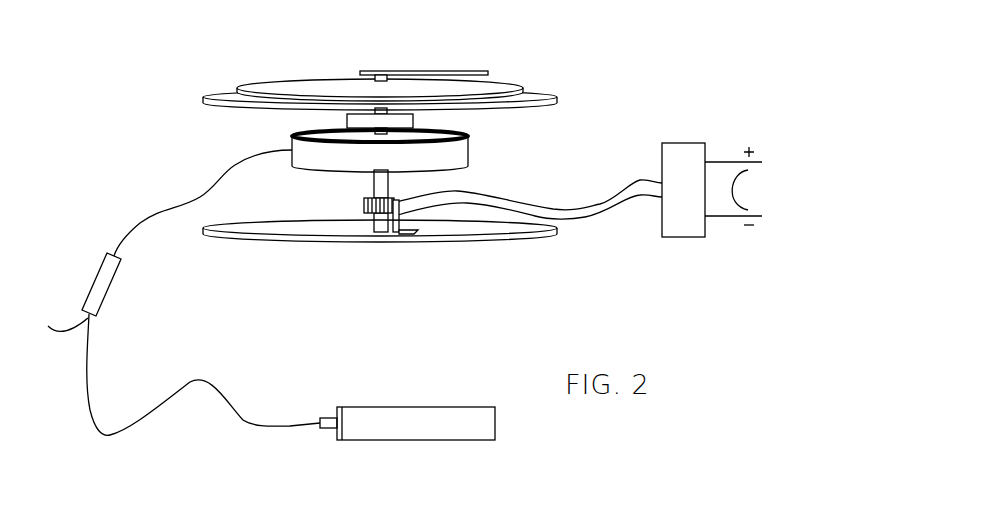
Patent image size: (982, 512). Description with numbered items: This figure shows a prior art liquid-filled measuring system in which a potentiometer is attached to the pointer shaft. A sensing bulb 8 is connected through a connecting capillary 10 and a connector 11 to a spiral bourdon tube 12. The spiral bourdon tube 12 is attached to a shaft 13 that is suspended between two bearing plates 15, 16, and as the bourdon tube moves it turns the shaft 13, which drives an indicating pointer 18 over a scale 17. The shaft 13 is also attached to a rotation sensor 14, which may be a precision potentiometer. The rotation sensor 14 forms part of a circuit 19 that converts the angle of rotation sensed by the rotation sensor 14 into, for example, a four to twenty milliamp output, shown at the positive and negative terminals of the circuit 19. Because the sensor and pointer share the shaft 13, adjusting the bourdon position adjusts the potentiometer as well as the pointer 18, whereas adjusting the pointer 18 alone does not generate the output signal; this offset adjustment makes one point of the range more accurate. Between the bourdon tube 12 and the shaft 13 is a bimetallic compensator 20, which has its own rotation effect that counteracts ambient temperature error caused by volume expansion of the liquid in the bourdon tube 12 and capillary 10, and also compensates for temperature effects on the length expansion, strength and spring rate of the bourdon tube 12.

The sensing bulb 8 is at (417, 407).
The connecting capillary 10 is at (210, 390).
The connector 11 is at (118, 277).
The spiral bourdon tube 12 is at (468, 150).
The shaft 13 is at (377, 180).
The rotation sensor 14 is at (363, 203).
The bearing plate 15 is at (325, 245).
The bearing plate 16 is at (543, 93).
The scale 17 is at (503, 85).
The indicating pointer 18 is at (465, 70).
The circuit 19 is at (683, 237).
The bimetallic compensator 20 is at (417, 120).